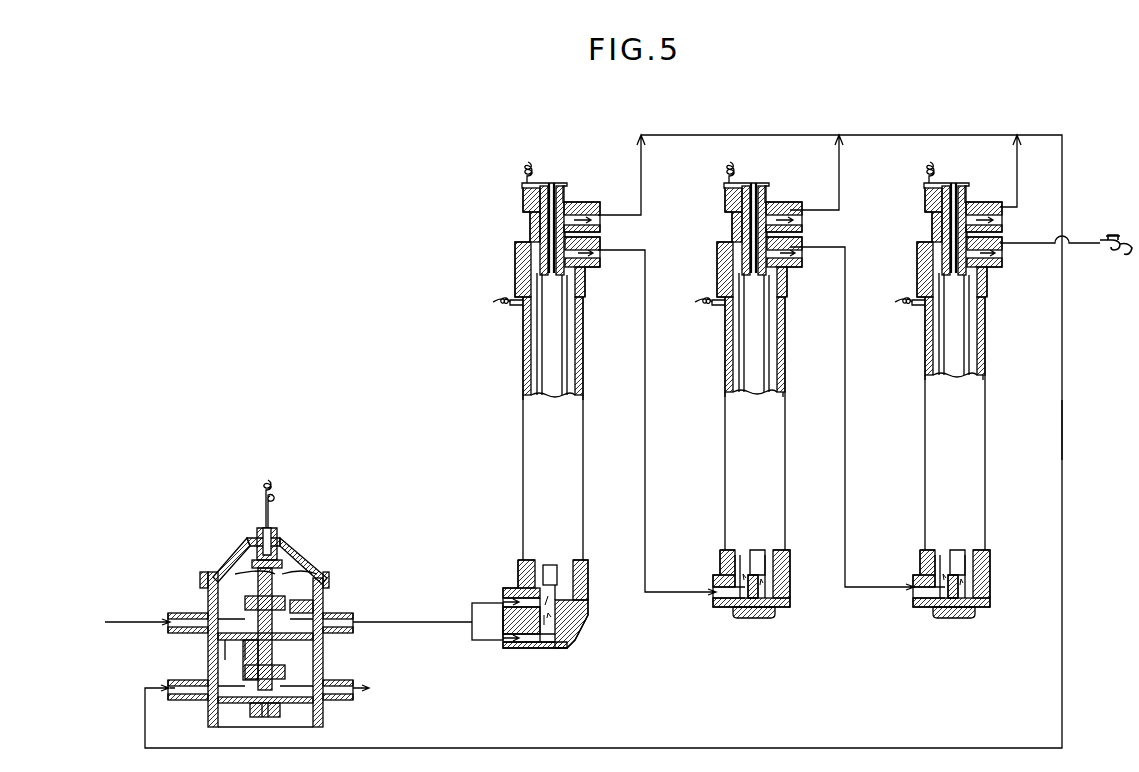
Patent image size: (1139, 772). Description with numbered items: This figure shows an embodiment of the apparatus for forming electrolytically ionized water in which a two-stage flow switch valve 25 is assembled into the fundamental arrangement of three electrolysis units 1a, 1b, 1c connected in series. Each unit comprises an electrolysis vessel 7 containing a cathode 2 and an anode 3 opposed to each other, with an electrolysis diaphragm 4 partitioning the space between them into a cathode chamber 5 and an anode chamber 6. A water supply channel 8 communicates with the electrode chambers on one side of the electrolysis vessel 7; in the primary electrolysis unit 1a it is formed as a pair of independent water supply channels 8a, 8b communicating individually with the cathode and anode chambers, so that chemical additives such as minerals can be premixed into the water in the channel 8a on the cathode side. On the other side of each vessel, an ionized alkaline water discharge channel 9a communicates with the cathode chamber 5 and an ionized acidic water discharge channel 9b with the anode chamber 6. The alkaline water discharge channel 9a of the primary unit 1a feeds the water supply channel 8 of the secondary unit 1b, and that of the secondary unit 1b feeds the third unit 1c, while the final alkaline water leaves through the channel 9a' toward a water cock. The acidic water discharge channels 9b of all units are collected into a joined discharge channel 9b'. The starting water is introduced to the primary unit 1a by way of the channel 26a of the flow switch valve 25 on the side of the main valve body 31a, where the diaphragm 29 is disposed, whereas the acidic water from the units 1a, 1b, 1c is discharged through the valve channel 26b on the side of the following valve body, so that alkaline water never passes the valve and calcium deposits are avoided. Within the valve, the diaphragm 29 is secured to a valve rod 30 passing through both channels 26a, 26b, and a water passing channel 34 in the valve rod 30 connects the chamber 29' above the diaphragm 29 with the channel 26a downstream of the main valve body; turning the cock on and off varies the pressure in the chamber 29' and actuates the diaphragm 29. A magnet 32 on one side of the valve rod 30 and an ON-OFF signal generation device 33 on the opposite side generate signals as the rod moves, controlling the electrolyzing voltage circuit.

The primary electrolysis unit 1a is at (517, 432).
The secondary electrolysis unit 1b is at (720, 442).
The third electrolysis unit 1c is at (914, 424).
The cathode 2 is at (530, 323).
The anode 3 is at (538, 346).
The electrolysis diaphragm 4 is at (534, 379).
The cathode chamber 5 is at (575, 298).
The anode chamber 6 is at (575, 324).
The electrolysis vessel 7 is at (582, 388).
The water supply channel 8 is at (450, 686).
The independent water supply channel on the cathode side 8a is at (502, 618).
The independent water supply channel on the anode side 8b is at (507, 635).
The ionized alkaline water discharge channel 9a is at (756, 421).
The alkaline water discharge channel 9a' is at (1066, 259).
The ionized acidic water discharge channel 9b is at (603, 441).
The joined acidic water discharge channel 9b' is at (1041, 430).
The 2-stage flow switch valve 25 is at (234, 519).
The channel on the main valve body side 26a is at (212, 610).
The channel on the following valve body side 26b is at (200, 682).
The diaphragm 29 is at (320, 560).
The chamber above the diaphragm 29' is at (232, 546).
The valve rod 30 is at (258, 657).
The main valve body 31a is at (217, 587).
The magnet 32 is at (284, 552).
The ON-OFF signal generation device 33 is at (273, 524).
The water passing channel 34 is at (308, 606).